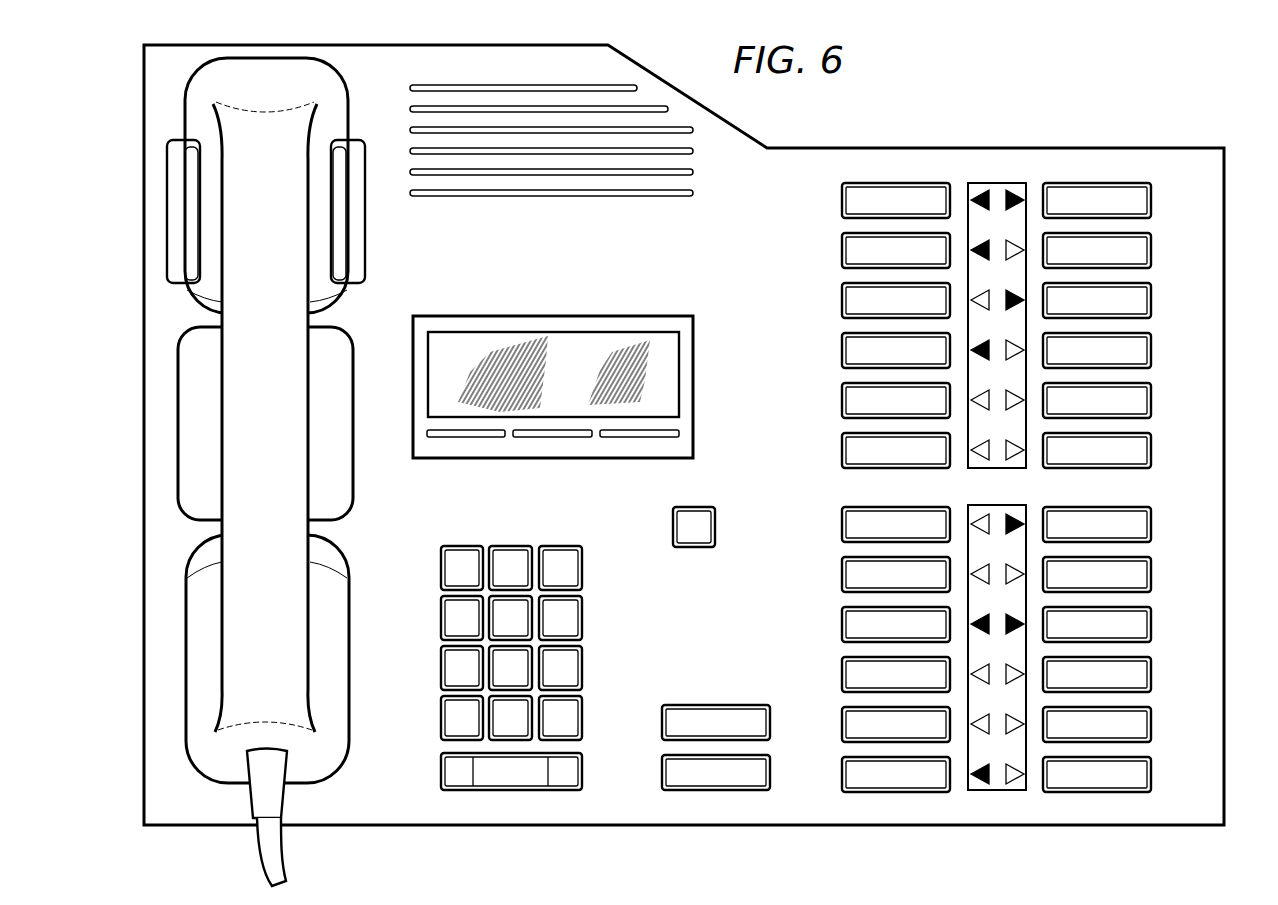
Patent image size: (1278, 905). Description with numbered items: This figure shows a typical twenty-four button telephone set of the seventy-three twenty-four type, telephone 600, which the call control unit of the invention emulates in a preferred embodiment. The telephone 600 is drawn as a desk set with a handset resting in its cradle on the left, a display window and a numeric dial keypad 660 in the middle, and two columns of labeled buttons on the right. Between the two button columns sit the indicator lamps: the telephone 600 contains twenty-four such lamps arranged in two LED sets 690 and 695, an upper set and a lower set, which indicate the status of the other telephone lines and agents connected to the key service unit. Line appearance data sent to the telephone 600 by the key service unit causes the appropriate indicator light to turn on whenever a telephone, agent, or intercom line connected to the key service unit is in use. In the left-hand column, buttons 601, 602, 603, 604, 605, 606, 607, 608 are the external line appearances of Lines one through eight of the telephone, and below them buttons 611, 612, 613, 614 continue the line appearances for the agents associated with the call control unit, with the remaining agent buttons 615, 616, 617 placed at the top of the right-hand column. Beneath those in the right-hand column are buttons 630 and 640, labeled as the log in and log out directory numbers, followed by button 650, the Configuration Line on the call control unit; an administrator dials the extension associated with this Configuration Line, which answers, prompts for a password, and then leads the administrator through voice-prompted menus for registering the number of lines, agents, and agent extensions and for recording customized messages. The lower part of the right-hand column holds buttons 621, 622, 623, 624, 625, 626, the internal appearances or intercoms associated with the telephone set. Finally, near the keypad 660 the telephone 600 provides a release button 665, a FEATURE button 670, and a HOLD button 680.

The telephone 600 is at (1203, 92).
The button 601 is at (842, 200).
The button 602 is at (842, 250).
The button 603 is at (842, 300).
The button 604 is at (842, 350).
The button 605 is at (842, 400).
The button 606 is at (842, 450).
The button 607 is at (842, 524).
The button 608 is at (842, 574).
The button 611 is at (842, 624).
The button 612 is at (842, 674).
The button 613 is at (842, 724).
The button 614 is at (842, 774).
The button 615 is at (1152, 200).
The button 616 is at (1152, 250).
The button 617 is at (1152, 300).
The button 621 is at (1152, 774).
The button 622 is at (1152, 724).
The button 623 is at (1152, 674).
The button 624 is at (1152, 624).
The button 625 is at (1152, 574).
The button 626 is at (1152, 524).
The Login DN key 630 is at (1152, 350).
The Logout DN key 640 is at (1152, 400).
The button 650 is at (1152, 450).
The dial keypad 660 is at (596, 617).
The release button 665 is at (673, 522).
The FEATURE button 670 is at (662, 720).
The HOLD button 680 is at (662, 770).
The LED set 690 is at (984, 179).
The LED set 695 is at (983, 795).